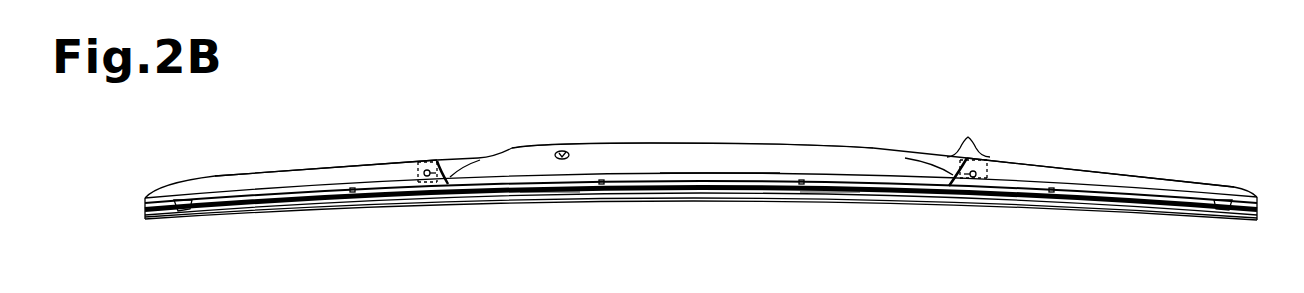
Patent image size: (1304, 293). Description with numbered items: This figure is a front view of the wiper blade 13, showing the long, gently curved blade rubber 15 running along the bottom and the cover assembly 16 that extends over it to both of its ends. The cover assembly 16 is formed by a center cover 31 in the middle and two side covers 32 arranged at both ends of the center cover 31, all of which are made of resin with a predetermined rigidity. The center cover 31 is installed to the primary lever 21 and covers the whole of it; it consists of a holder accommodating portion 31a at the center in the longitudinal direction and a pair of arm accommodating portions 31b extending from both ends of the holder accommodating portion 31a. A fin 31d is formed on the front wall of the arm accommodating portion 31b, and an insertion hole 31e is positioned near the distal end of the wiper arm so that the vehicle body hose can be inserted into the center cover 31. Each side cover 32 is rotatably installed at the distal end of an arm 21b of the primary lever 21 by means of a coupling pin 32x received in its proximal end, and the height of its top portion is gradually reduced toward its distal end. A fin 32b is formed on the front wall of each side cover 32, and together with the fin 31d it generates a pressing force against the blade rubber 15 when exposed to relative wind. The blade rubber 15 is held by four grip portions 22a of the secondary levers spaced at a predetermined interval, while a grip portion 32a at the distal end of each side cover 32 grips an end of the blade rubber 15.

The wiper blade 13 is at (1056, 78).
The blade rubber 15 is at (273, 211).
The cover assembly 16 is at (968, 133).
The primary lever 21 is at (702, 172).
The arm 21b is at (1012, 118).
The grip portion 22a is at (352, 194).
The center cover 31 is at (808, 151).
The holder accommodating portion 31a is at (722, 164).
The arm accommodating portion 31b is at (550, 193).
The fin 31d is at (545, 163).
The insertion hole 31e is at (562, 150).
The side cover 32 is at (1089, 152).
The grip portion 32a is at (178, 203).
The fin 32b is at (343, 172).
The coupling pin 32x is at (440, 185).